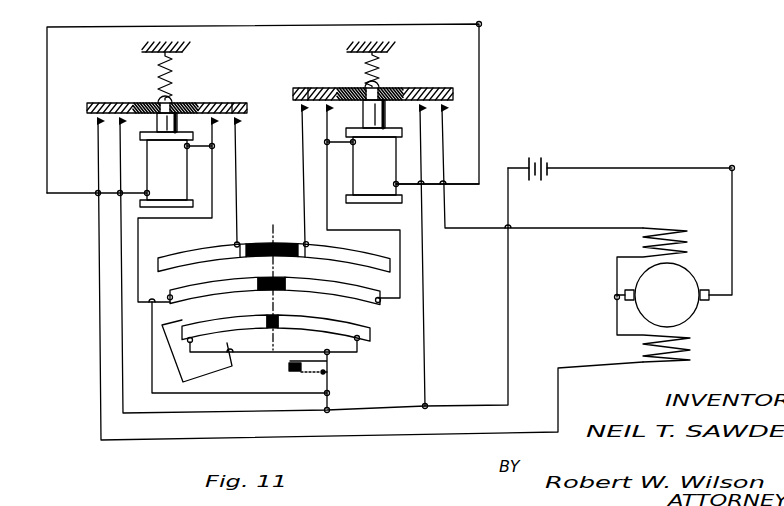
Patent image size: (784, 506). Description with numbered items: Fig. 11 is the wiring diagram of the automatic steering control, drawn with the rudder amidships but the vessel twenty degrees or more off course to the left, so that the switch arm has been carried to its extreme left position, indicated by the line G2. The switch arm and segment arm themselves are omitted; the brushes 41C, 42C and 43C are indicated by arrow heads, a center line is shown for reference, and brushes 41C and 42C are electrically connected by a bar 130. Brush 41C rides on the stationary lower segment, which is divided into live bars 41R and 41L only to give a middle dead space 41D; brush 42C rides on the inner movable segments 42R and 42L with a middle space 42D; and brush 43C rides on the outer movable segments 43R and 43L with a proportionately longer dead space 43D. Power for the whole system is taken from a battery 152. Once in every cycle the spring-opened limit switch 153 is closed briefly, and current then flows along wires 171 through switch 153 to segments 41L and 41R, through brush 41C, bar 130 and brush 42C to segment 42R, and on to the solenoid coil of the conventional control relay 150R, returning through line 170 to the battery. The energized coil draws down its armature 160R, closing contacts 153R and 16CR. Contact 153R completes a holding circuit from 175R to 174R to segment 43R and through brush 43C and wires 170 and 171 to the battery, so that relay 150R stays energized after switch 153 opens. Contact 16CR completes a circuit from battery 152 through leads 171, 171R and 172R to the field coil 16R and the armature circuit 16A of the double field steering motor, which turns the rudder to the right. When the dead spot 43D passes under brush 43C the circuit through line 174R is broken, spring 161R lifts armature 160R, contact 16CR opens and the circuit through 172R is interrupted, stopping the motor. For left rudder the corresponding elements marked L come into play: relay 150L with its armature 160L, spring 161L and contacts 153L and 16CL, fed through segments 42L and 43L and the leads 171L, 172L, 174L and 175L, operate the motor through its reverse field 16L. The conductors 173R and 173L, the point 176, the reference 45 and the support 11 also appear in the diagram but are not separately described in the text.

The fixed support 11 is at (188, 52).
The contact 16CR is at (90, 103).
The left crossbar 16CL is at (441, 88).
The spring 161R is at (156, 73).
The left spring 161L is at (364, 73).
The contact 153R is at (233, 103).
The left contact 153L is at (307, 88).
The armature 160R is at (157, 127).
The left plunger 160L is at (380, 121).
The control relay 150R is at (166, 169).
The control relay 150L is at (374, 165).
The lead 171R is at (119, 173).
The left conductor 171L is at (442, 142).
The wires 171 is at (412, 405).
The lead 172R is at (100, 268).
The left conductor 172L is at (492, 231).
The right conductor 173R is at (138, 259).
The left conductor 173L is at (330, 227).
The line 174R is at (236, 169).
The left conductor 174L is at (302, 141).
The lead 175R is at (235, 138).
The left conductor 175L is at (327, 132).
The battery 152 is at (548, 166).
The junction 176 is at (736, 168).
The reverse field 16L is at (662, 229).
The field coil 16R is at (686, 361).
The armature circuit 16A is at (663, 295).
The brush 43C is at (199, 259).
The dead space 43D is at (286, 243).
The movable upper segment 43L is at (362, 253).
The movable upper segment 43R is at (212, 262).
The brush 42C is at (213, 291).
The middle space 42D is at (287, 278).
The contact segment 42L is at (360, 288).
The contact segment 42R is at (237, 295).
The brush 41C is at (224, 329).
The dead space 41D is at (282, 315).
The segment 41L is at (368, 327).
The segment 41R is at (243, 332).
The line G2 is at (210, 244).
The center line 45 is at (271, 226).
The bar 130 is at (186, 381).
The line 170 is at (255, 393).
The spring-opened limit switch 153 is at (331, 372).